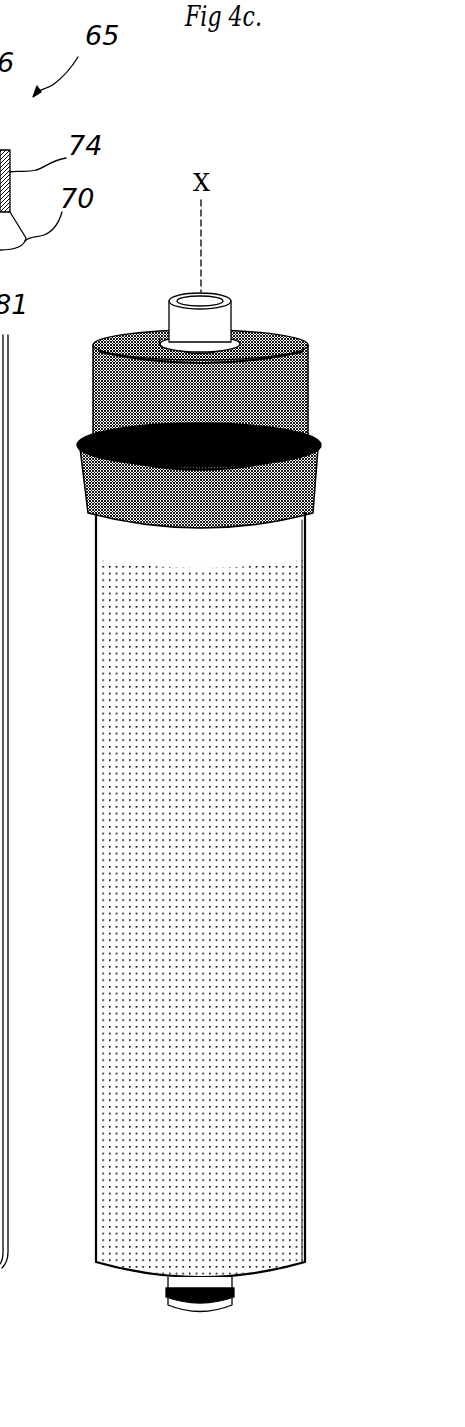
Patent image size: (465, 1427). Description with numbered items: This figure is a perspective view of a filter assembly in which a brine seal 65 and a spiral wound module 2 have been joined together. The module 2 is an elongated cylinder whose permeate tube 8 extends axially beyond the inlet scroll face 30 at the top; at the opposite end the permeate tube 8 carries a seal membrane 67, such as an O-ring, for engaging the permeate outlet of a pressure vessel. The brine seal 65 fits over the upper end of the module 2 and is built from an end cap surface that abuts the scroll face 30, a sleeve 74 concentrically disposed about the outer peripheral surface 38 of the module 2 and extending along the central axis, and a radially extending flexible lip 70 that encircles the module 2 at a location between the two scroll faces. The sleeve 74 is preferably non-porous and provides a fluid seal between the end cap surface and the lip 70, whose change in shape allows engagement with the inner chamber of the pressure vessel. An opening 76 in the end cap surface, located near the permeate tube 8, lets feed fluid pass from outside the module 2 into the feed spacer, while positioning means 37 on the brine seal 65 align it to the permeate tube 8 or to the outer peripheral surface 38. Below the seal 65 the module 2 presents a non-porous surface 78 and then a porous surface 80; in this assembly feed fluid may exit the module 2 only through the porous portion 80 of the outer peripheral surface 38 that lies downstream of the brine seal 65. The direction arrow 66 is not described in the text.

The module 2 is at (83, 857).
The permeate tube 8 is at (236, 302).
The inlet scroll face 30 is at (160, 332).
The positioning means 37 is at (243, 326).
The outer peripheral surface 38 is at (158, 748).
The brine seal 65 is at (88, 320).
The direction of insertion 66 is at (255, 197).
The seal membrane 67 is at (234, 1292).
The radially extending flexible lip 70 is at (79, 430).
The sleeve 74 is at (94, 388).
The opening 76 is at (165, 328).
The non-porous surface 78 is at (97, 545).
The porous surface 80 is at (96, 596).